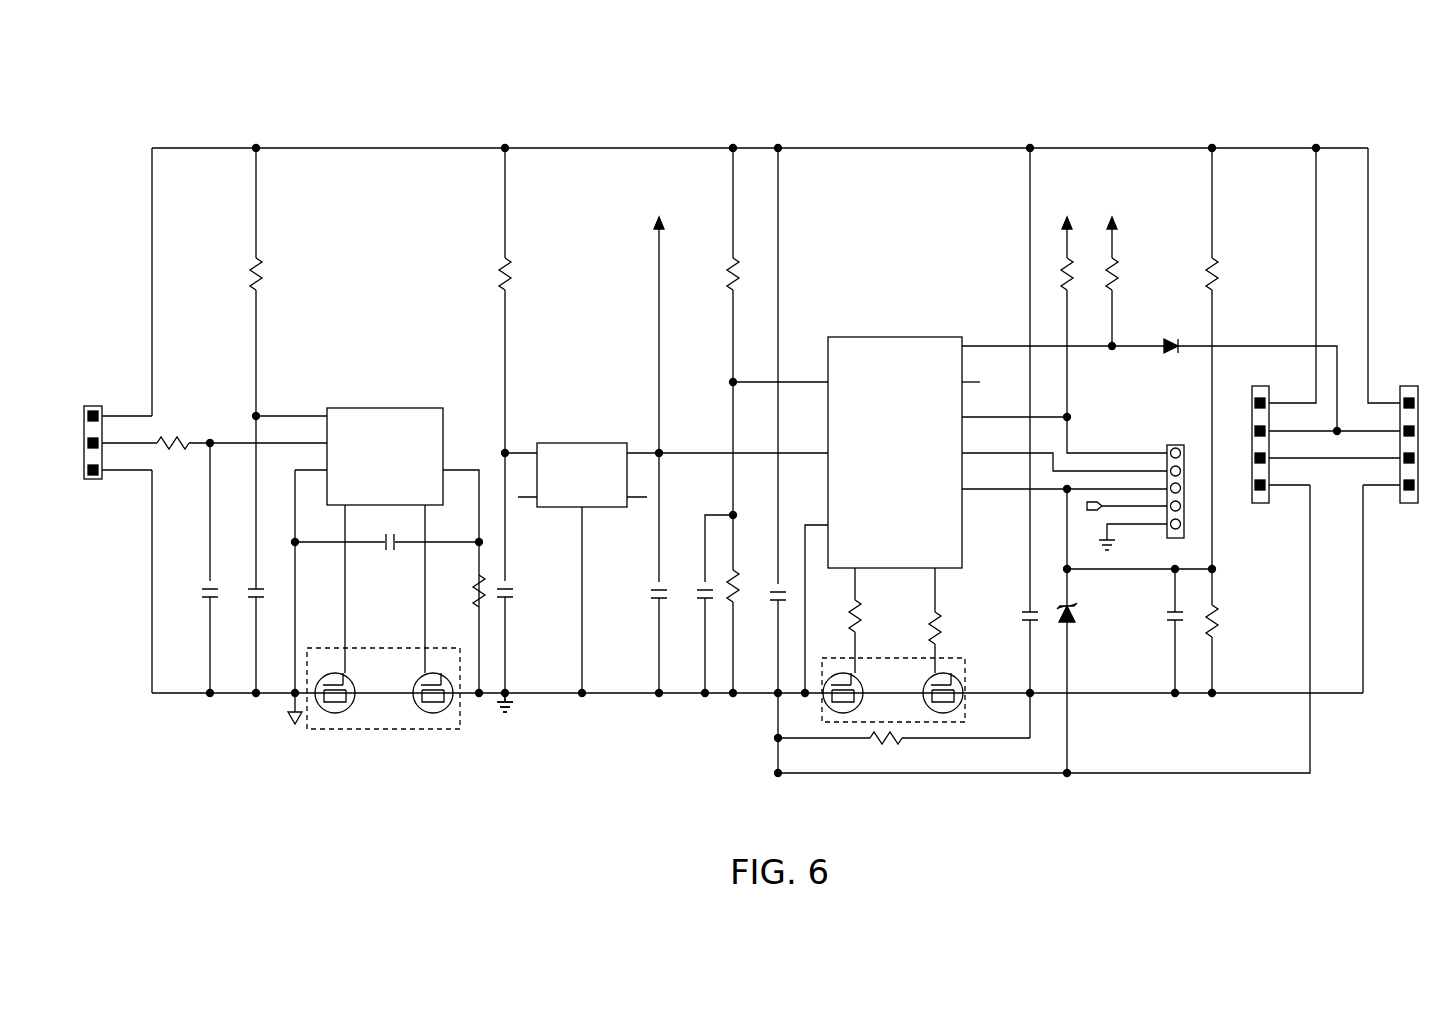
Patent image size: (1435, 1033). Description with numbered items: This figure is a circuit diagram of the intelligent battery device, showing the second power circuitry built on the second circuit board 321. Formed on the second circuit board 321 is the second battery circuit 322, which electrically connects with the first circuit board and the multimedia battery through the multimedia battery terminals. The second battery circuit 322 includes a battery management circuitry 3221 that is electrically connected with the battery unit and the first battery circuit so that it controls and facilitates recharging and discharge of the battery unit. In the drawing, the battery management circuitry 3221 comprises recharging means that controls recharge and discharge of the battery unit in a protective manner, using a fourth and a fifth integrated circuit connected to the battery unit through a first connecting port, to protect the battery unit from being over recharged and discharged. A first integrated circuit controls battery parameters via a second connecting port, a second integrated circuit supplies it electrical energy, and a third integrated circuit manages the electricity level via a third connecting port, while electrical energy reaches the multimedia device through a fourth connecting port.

The second circuit board 321 is at (705, 208).
The second battery circuit 322 is at (352, 754).
The battery management circuitry 3221 is at (538, 718).